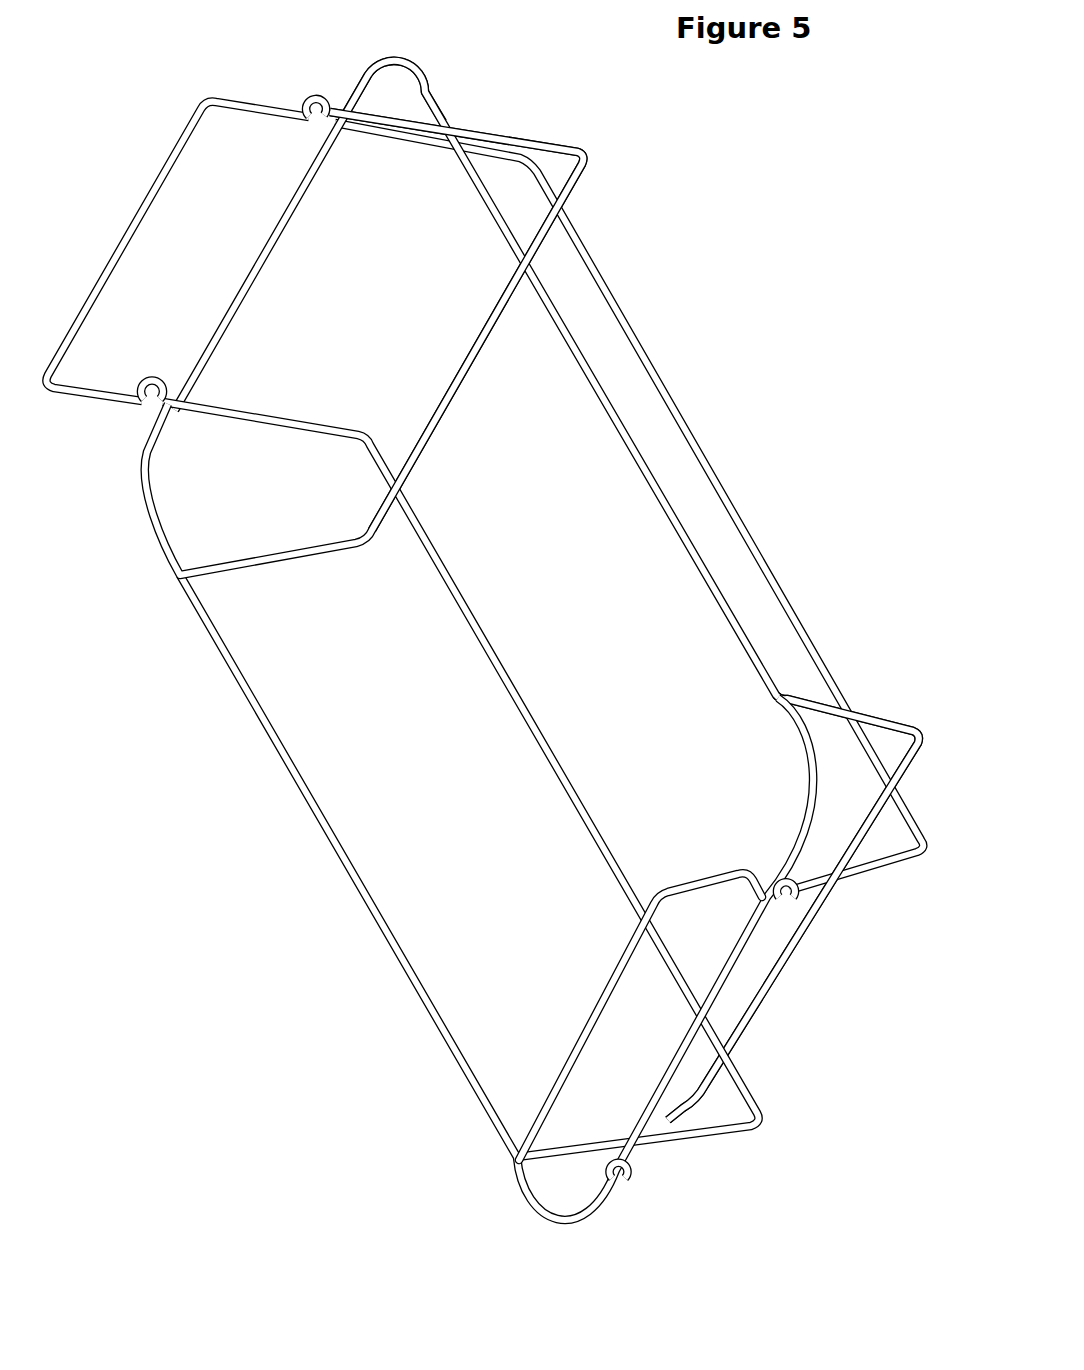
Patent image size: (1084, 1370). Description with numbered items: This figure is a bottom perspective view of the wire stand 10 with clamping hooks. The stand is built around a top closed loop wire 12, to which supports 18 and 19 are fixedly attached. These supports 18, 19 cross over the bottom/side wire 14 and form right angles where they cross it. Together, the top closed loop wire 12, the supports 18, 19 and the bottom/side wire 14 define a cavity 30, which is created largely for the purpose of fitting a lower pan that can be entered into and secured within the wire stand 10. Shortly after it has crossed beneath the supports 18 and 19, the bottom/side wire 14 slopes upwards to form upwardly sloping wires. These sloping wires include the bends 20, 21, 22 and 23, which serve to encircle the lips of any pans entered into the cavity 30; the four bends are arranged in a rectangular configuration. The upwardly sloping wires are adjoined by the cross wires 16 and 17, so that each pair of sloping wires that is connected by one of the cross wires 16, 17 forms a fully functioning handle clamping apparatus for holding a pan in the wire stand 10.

The wire stand 10 is at (600, 273).
The top closed loop wire 12 is at (407, 70).
The bottom/side wire 14 is at (527, 157).
The cross wire 16 is at (140, 216).
The cross wire 17 is at (537, 1112).
The support 18 is at (582, 183).
The support 19 is at (805, 950).
The bend 20 is at (137, 390).
The bend 21 is at (306, 94).
The bend 22 is at (622, 1183).
The bend 23 is at (792, 893).
The cavity 30 is at (600, 440).